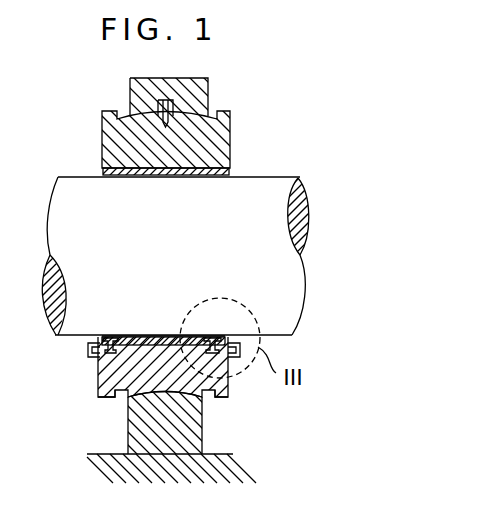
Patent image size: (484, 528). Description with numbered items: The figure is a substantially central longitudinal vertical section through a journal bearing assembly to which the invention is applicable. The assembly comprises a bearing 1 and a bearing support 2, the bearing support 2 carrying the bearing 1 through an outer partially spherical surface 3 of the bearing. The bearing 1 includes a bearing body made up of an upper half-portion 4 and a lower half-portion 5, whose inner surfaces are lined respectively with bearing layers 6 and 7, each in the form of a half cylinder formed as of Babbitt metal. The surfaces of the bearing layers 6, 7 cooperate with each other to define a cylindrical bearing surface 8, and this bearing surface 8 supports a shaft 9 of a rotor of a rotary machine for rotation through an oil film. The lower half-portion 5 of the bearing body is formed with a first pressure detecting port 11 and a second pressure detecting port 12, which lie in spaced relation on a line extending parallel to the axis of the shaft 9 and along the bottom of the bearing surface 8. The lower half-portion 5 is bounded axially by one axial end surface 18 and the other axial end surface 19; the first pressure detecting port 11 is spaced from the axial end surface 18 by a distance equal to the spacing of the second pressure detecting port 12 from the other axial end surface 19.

The bearing 1 is at (233, 381).
The bearing support 2 is at (188, 437).
The outer partially spherical surface 3 is at (140, 396).
The upper half-portion 4 is at (232, 130).
The lower half-portion 5 is at (110, 370).
The bearing layer 6 is at (227, 170).
The bearing layer 7 is at (166, 335).
The cylindrical bearing surface 8 is at (135, 335).
The shaft 9 is at (73, 186).
The first pressure detecting port 11 is at (212, 335).
The second pressure detecting port 12 is at (112, 337).
The axial end surface 18 is at (229, 388).
The axial end surface 19 is at (104, 390).